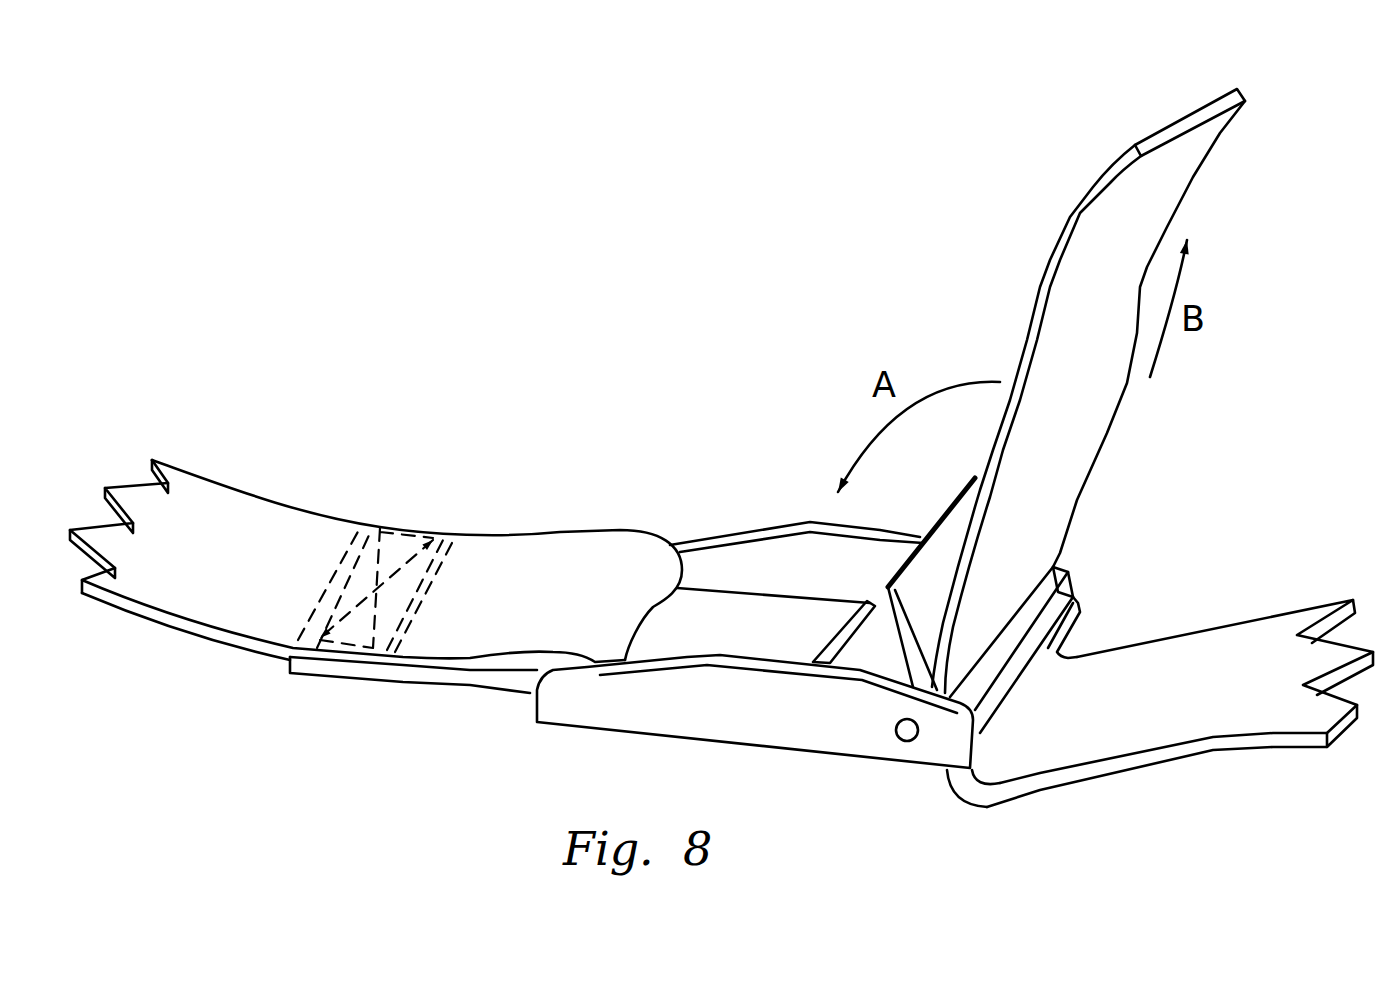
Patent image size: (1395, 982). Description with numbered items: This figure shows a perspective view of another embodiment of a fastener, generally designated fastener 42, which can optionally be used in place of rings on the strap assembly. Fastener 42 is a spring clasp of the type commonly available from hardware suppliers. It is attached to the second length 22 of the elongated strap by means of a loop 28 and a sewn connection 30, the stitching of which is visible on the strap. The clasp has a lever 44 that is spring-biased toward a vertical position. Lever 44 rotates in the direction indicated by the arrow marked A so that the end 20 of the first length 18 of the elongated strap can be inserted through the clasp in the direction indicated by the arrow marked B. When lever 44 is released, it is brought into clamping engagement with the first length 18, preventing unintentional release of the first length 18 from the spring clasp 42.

The first length 18 is at (1198, 712).
The end 20 is at (1166, 121).
The second length 22 is at (208, 569).
The loop 28 is at (470, 690).
The sewn connection 30 is at (387, 528).
The fastener 42 is at (652, 427).
The lever 44 is at (892, 647).